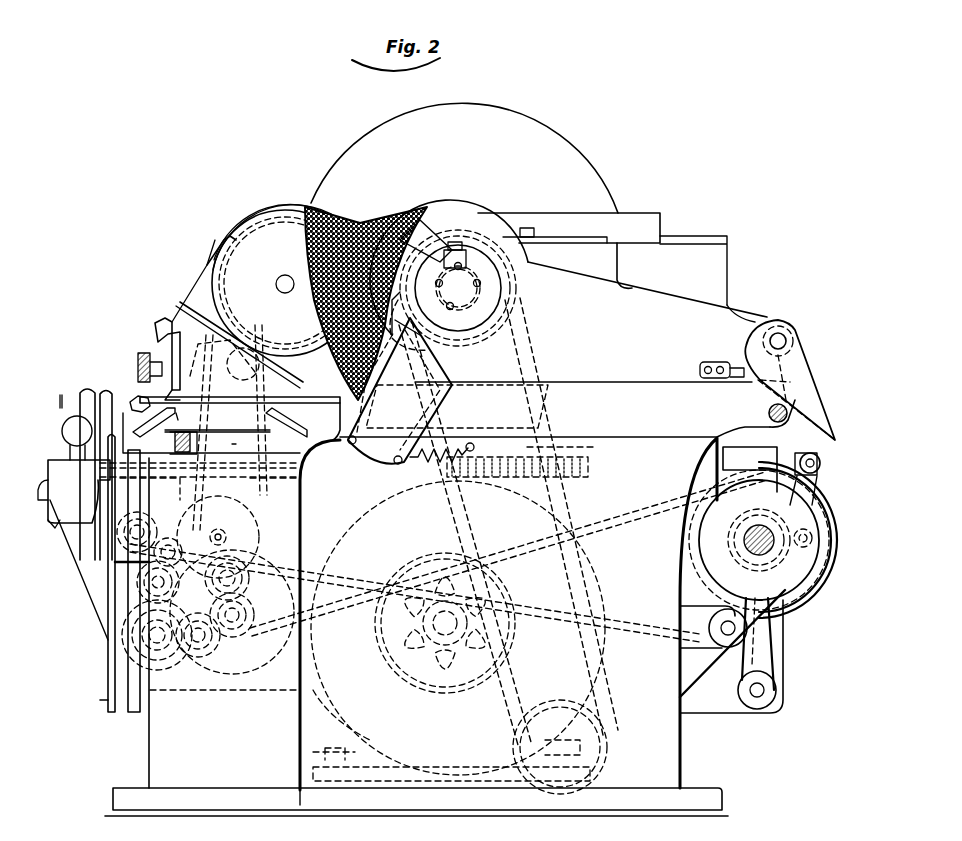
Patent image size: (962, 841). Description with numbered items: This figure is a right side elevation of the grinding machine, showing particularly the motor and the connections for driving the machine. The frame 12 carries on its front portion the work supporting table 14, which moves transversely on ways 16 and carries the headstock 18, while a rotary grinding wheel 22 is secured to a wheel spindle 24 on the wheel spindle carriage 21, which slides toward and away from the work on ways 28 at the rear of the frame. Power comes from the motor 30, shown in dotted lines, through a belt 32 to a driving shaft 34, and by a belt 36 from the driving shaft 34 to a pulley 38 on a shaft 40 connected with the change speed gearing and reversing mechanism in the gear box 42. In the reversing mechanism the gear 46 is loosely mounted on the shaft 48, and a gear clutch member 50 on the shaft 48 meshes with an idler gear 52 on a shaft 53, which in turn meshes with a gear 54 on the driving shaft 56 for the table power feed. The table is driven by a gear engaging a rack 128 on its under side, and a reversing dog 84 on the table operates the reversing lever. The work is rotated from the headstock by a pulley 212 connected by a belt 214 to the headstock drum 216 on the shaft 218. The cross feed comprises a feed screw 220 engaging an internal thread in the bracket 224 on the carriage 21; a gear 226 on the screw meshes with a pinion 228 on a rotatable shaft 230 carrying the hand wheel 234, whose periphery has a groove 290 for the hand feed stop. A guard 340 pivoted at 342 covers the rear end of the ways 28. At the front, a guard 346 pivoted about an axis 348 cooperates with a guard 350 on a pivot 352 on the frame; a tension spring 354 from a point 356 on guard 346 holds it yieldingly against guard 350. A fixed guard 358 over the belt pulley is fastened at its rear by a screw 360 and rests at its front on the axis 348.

The frame 12 is at (464, 536).
The work supporting table 14 is at (220, 448).
The ways 16 is at (320, 596).
The headstock 18 is at (207, 265).
The wheel spindle carriage 21 is at (555, 325).
The rotary grinding wheel 22 is at (318, 212).
The wheel spindle 24 is at (458, 286).
The ways 28 is at (560, 384).
The motor 30 is at (572, 674).
The belt 32 is at (590, 520).
The driving shaft 34 is at (757, 525).
The belt 36 is at (728, 713).
The pulley 38 is at (265, 675).
The shaft 40 is at (247, 626).
The gear box 42 is at (190, 690).
The gear 46 is at (150, 588).
The shaft 48 is at (130, 600).
The gear clutch member 50 is at (110, 628).
The idler gear 52 is at (150, 575).
The shaft 53 is at (160, 552).
The gear 54 is at (98, 530).
The driving shaft 56 is at (141, 528).
The dog 84 is at (135, 396).
The rack 128 is at (252, 444).
The pulley 212 is at (274, 234).
The belt 214 is at (180, 302).
The headstock drum 216 is at (242, 526).
The shaft 218 is at (228, 538).
The feed screw 220 is at (590, 466).
The bracket 224 is at (593, 449).
The gear 226 is at (190, 436).
The pinion 228 is at (245, 518).
The rotatable shaft 230 is at (186, 407).
The hand wheel 234 is at (88, 393).
The groove 290 is at (99, 390).
The guard 340 is at (748, 351).
The pivot 342 is at (780, 336).
The guard 346 is at (433, 370).
The axis 348 is at (440, 352).
The guard 350 is at (380, 382).
The pivot 352 is at (356, 446).
The tension spring 354 is at (446, 446).
The point 356 is at (394, 443).
The fixed guard 358 is at (475, 200).
The screw 360 is at (528, 234).